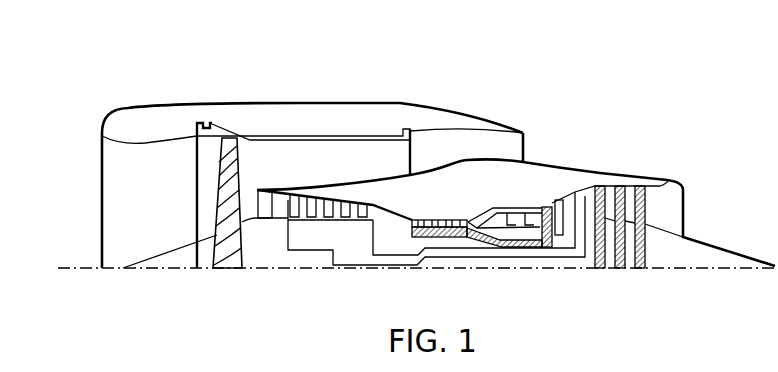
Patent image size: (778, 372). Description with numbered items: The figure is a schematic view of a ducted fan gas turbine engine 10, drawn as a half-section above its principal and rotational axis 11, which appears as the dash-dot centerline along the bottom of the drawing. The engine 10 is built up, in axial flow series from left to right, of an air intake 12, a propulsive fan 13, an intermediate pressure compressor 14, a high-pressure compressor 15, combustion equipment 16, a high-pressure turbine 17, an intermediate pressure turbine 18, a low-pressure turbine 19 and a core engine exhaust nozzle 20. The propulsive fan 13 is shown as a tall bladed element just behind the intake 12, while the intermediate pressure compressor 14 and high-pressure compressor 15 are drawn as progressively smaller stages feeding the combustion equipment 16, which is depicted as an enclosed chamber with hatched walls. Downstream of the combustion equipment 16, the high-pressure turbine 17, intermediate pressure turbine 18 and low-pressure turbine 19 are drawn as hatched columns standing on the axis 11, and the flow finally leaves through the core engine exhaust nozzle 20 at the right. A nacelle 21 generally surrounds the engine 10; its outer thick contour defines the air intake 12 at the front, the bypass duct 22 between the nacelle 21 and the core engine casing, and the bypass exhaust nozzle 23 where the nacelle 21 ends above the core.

The ducted fan gas turbine engine 10 is at (646, 50).
The principal and rotational axis 11 is at (85, 268).
The air intake 12 is at (117, 143).
The propulsive fan 13 is at (227, 142).
The intermediate pressure compressor 14 is at (337, 200).
The high-pressure compressor 15 is at (437, 221).
The combustion equipment 16 is at (497, 216).
The high-pressure turbine 17 is at (546, 207).
The intermediate pressure turbine 18 is at (582, 197).
The low-pressure turbine 19 is at (619, 187).
The core engine exhaust nozzle 20 is at (671, 190).
The nacelle 21 is at (163, 120).
The bypass duct 22 is at (357, 153).
The bypass exhaust nozzle 23 is at (524, 134).